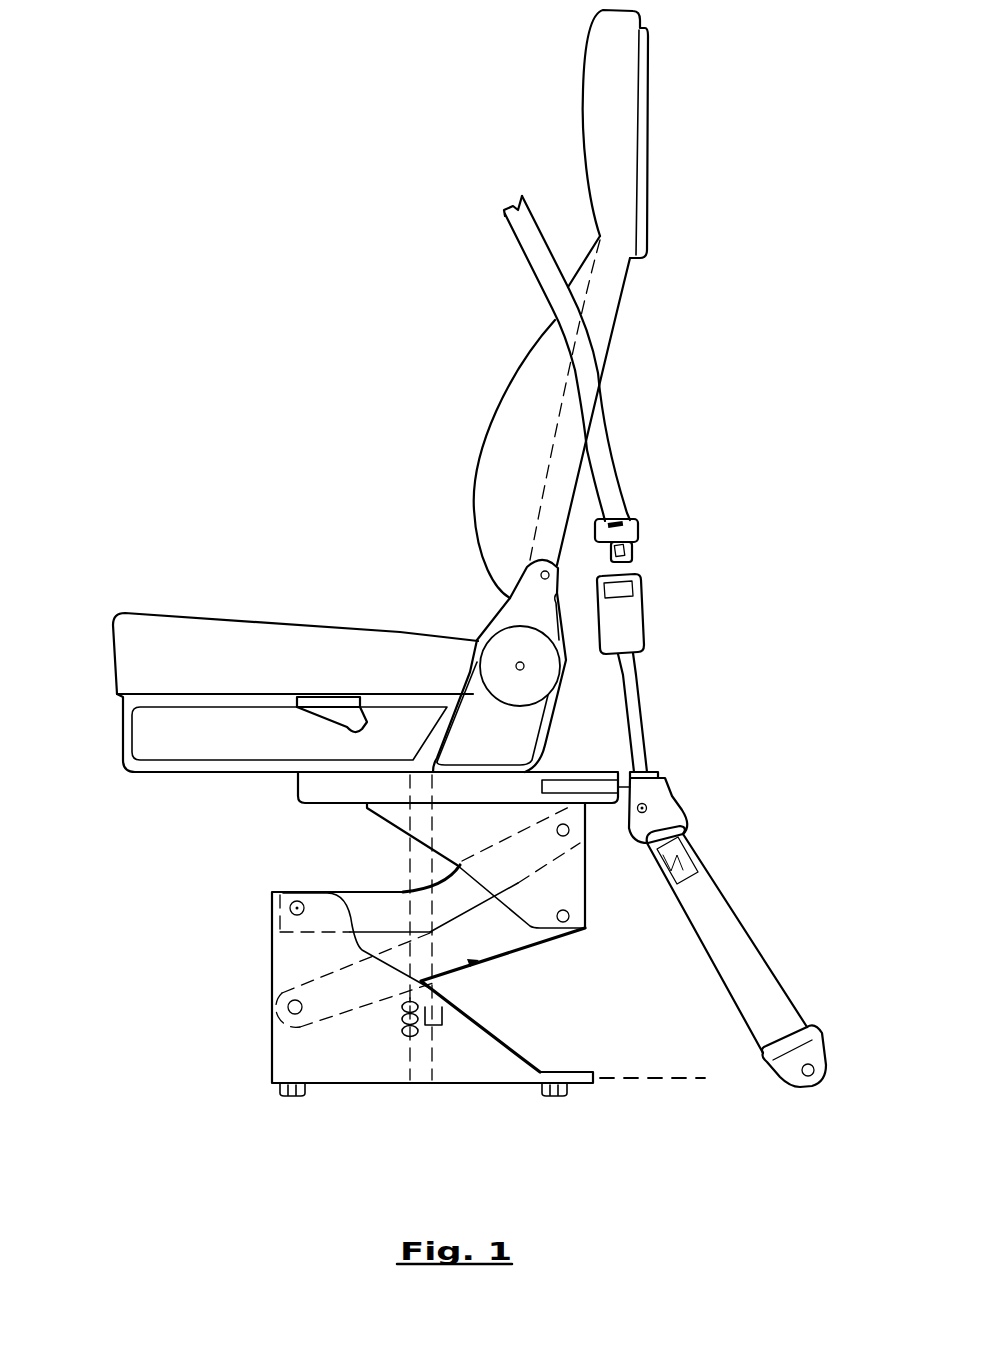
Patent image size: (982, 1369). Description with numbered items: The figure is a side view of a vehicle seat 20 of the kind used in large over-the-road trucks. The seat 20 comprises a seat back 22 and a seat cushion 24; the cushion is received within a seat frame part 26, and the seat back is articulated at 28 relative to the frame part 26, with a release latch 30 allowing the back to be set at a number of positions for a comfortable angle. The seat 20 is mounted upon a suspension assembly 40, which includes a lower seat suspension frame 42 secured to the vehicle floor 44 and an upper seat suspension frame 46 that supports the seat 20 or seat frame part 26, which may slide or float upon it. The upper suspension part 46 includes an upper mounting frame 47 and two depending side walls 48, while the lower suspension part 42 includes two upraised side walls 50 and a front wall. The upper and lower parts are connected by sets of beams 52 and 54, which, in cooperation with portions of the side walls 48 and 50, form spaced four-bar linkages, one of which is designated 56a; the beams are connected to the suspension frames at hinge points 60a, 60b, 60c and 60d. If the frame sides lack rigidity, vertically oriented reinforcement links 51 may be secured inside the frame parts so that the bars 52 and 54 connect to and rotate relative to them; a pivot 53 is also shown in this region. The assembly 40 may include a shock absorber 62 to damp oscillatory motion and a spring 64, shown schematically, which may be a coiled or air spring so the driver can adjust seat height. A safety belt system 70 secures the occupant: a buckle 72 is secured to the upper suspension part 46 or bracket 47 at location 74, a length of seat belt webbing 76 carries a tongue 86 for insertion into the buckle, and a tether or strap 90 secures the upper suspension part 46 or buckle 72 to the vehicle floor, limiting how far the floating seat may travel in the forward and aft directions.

The vehicle seat 20 is at (378, 204).
The seat back 22 is at (543, 357).
The seat cushion 24 is at (245, 625).
The seat frame part 26 is at (193, 755).
The articulation point 28 is at (524, 668).
The release latch 30 is at (340, 722).
The suspension assembly 40 is at (179, 959).
The lower seat suspension frame 42 is at (273, 1042).
The vehicle floor 44 is at (652, 1082).
The upper seat suspension frame 46 is at (383, 826).
The upper mounting frame 47 is at (300, 793).
The depending side walls 48 is at (567, 884).
The upraised side walls 50 is at (287, 967).
The reinforcement link 51 is at (270, 902).
The upper beam 52 is at (393, 893).
The pivot 53 is at (303, 1003).
The lower beam 54 is at (523, 940).
The four-bar linkage 56a is at (477, 963).
The hinge point 60a is at (282, 893).
The hinge point 60b is at (568, 826).
The hinge point 60c is at (568, 921).
The hinge point 60d is at (272, 1002).
The shock absorber 62 is at (436, 1045).
The spring 64 is at (404, 1014).
The safety belt system 70 is at (621, 465).
The buckle 72 is at (648, 618).
The buckle attachment location 74 is at (648, 806).
The seat belt webbing 76 is at (583, 355).
The tongue 86 is at (641, 527).
The tether strap 90 is at (735, 943).